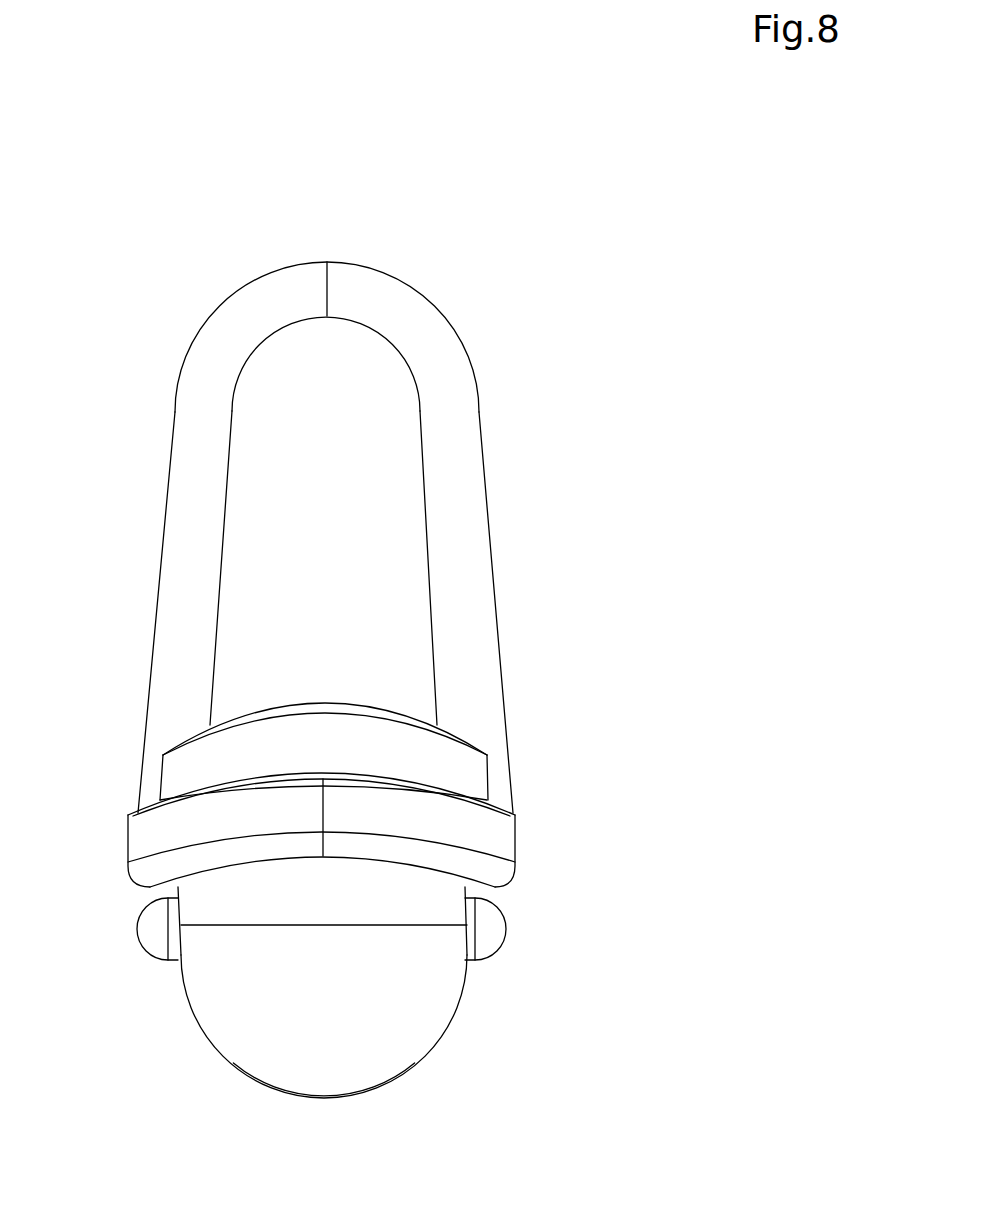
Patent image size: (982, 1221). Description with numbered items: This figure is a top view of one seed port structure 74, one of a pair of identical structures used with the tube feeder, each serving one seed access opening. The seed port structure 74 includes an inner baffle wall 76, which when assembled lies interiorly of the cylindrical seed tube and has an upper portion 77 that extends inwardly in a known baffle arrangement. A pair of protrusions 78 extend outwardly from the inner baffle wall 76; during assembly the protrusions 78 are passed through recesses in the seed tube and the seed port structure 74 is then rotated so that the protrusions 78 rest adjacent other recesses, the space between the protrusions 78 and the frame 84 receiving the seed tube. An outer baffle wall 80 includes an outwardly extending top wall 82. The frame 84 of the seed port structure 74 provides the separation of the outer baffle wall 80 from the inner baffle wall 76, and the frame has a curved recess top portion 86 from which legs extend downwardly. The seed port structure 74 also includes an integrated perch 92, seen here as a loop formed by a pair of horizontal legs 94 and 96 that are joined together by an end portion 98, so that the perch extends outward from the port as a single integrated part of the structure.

The seed port structure 74 is at (355, 651).
The inner baffle wall 76 is at (333, 985).
The upper portion 77 is at (338, 1045).
The protrusions 78 is at (145, 947).
The outer baffle wall 80 is at (324, 713).
The top wall 82 is at (340, 762).
The frame 84 is at (518, 845).
The curved recess top portion 86 is at (330, 883).
The integrated perch 92 is at (311, 509).
The horizontal leg 94 is at (168, 603).
The horizontal leg 96 is at (463, 410).
The end portion 98 is at (367, 290).